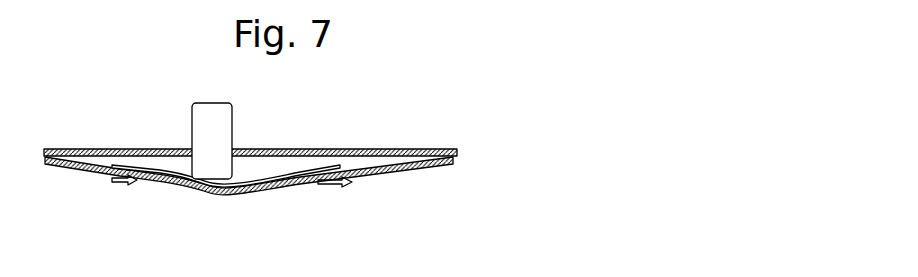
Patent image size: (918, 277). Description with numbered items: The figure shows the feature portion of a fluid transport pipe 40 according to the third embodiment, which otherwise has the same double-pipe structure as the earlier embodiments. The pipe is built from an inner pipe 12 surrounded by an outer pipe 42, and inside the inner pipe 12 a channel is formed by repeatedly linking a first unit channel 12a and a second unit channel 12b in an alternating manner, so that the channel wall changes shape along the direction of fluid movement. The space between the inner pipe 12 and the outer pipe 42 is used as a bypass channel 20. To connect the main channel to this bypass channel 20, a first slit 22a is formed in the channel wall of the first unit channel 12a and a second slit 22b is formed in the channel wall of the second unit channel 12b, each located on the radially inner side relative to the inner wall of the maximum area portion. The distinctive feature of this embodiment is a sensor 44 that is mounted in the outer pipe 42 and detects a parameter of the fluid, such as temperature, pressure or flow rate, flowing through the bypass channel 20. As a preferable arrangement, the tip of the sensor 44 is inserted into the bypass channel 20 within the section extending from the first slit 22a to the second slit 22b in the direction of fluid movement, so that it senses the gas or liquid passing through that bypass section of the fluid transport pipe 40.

The inner pipe 12 is at (443, 165).
The first unit channel 12a is at (125, 203).
The second unit channel 12b is at (358, 203).
The bypass channel 20 is at (273, 172).
The first slit 22a is at (148, 175).
The second slit 22b is at (312, 176).
The fluid transport pipe 40 is at (472, 131).
The outer pipe 42 is at (323, 148).
The sensor 44 is at (200, 122).